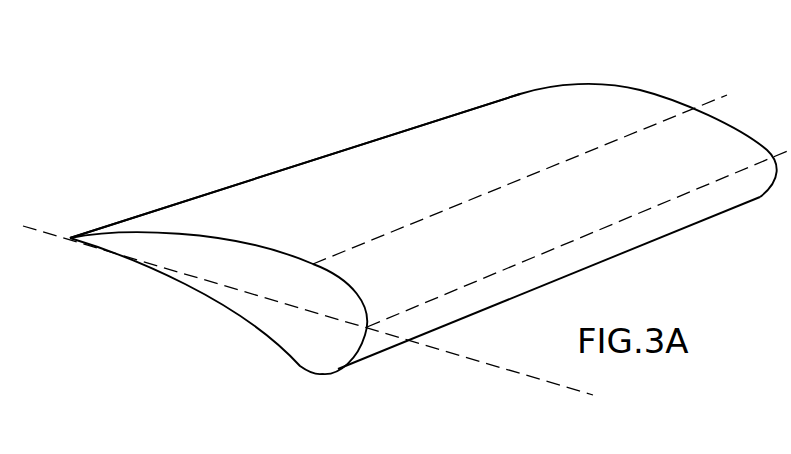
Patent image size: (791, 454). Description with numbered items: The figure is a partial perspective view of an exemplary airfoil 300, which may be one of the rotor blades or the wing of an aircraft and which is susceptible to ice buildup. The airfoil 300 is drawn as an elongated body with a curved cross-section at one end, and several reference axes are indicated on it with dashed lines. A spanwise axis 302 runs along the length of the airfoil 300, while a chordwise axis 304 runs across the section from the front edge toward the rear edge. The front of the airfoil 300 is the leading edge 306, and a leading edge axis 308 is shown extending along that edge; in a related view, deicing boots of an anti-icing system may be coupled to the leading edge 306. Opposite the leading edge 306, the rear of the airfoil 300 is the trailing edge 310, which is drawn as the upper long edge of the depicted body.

The airfoil 300 is at (617, 78).
The spanwise axis 302 is at (519, 175).
The chordwise axis 304 is at (473, 364).
The leading edge 306 is at (668, 232).
The leading edge axis 308 is at (719, 173).
The trailing edge 310 is at (365, 142).